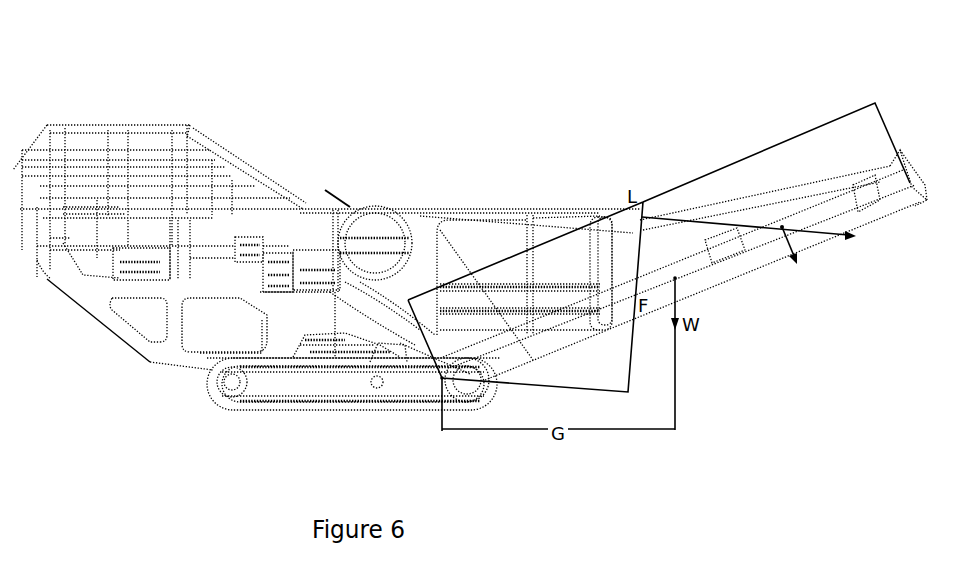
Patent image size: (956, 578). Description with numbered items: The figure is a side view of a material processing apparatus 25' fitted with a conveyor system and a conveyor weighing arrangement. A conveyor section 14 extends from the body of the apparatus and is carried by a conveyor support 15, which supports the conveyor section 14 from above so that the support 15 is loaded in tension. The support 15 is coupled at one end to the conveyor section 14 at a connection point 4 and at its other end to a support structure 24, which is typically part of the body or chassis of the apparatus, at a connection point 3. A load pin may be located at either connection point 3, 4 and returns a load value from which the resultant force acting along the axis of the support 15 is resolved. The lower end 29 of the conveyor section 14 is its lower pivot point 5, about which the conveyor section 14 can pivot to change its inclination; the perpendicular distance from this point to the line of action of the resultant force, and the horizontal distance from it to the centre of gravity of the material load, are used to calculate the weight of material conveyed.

The material processing apparatus 25' is at (470, 230).
The support structure 24 is at (773, 156).
The connection point 3 is at (759, 211).
The conveyor support 15 is at (776, 228).
The connection point 4 is at (802, 191).
The conveyor section 14 is at (663, 276).
The lower pivot point 5 is at (353, 401).
The lower end 29 is at (420, 384).